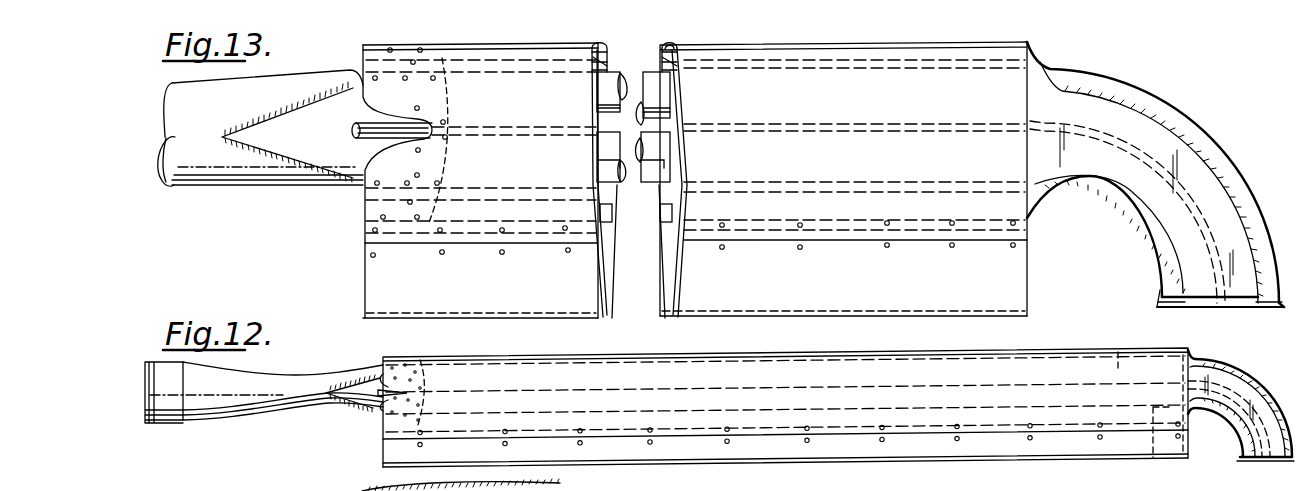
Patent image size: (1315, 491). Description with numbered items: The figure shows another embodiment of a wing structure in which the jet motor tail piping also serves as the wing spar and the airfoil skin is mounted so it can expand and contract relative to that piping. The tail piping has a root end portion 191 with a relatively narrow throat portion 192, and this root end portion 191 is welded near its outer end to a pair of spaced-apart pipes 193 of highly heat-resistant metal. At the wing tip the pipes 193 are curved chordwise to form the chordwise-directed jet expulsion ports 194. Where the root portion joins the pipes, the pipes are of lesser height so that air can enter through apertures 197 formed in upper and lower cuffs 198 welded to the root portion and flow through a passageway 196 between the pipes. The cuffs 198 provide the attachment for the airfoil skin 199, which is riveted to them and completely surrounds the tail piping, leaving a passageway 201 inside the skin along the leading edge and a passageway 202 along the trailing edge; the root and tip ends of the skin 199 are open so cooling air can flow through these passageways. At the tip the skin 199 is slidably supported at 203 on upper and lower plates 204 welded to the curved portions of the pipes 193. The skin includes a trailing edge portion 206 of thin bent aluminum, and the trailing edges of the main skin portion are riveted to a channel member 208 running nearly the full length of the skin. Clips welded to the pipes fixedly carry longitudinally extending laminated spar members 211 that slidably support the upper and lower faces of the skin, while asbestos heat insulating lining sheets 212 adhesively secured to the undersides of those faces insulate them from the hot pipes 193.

In FIG. 13, the root end portion 191 is at (212, 186).
In FIG. 12, the root end portion 191 is at (207, 460).
In FIG. 12, the throat portion 192 is at (263, 382).
In FIG. 13, the pipes 193 is at (378, 124).
In FIG. 12, the pipes 193 is at (1117, 350).
In FIG. 13, the jet expulsion ports 194 is at (1175, 308).
In FIG. 13, the passageway 196 is at (400, 127).
In FIG. 13, the apertures 197 is at (355, 134).
In FIG. 12, the apertures 197 is at (378, 394).
In FIG. 13, the cuffs 198 is at (447, 90).
In FIG. 12, the cuffs 198 is at (350, 384).
In FIG. 13, the airfoil skin 199 is at (543, 80).
In FIG. 12, the airfoil skin 199 is at (708, 488).
In FIG. 13, the passageway 201 is at (672, 45).
In FIG. 13, the passageway 202 is at (672, 262).
In FIG. 13, the sliding support 203 is at (1018, 73).
In FIG. 12, the sliding support 203 is at (1200, 330).
In FIG. 13, the plates 204 is at (1165, 208).
In FIG. 12, the plates 204 is at (1230, 390).
In FIG. 13, the trailing edge portion 206 is at (767, 292).
In FIG. 12, the trailing edge portion 206 is at (1027, 445).
In FIG. 13, the channel member 208 is at (603, 220).
In FIG. 13, the spar members 211 is at (660, 50).
In FIG. 13, the heat insulating lining sheets 212 is at (595, 164).